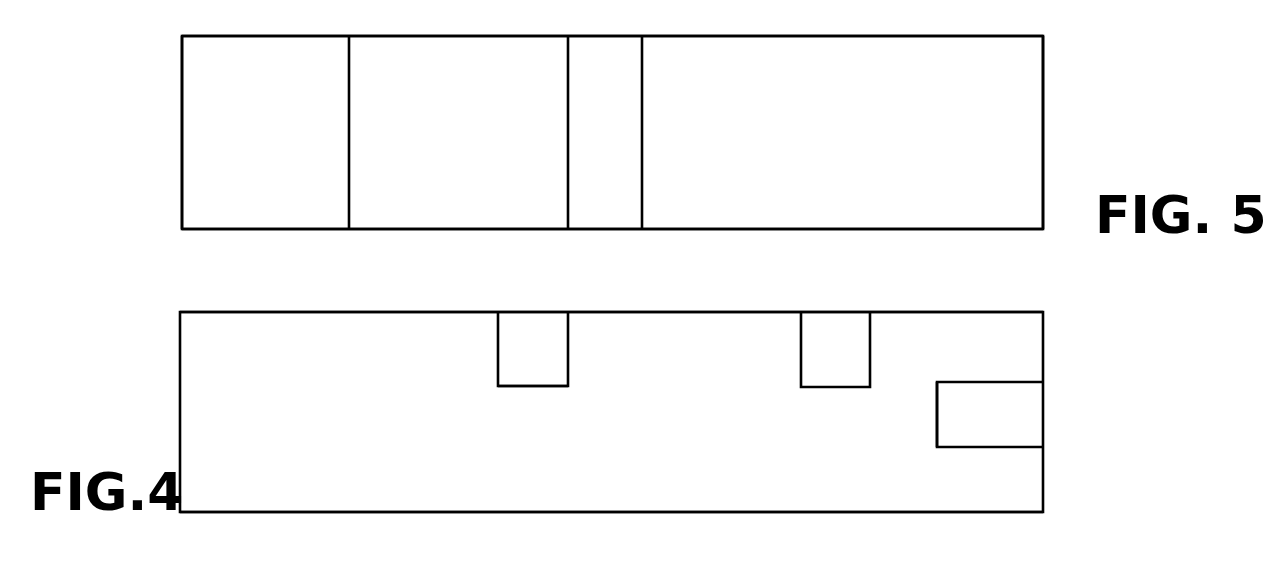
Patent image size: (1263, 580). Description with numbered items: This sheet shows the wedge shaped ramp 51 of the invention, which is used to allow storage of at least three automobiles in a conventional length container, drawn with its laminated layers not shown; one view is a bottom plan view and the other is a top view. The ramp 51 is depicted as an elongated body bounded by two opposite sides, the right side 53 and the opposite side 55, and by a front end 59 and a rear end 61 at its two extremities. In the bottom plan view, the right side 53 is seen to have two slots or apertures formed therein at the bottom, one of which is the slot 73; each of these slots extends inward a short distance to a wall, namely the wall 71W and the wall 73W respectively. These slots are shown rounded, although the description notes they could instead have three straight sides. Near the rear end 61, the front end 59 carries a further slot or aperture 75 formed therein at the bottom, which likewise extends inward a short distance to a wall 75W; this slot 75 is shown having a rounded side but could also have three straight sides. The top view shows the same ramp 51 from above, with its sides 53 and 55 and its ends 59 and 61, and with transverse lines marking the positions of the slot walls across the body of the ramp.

In FIG. 5, the wedge shaped ramp 51 is at (176, 71).
In FIG. 4, the wedge shaped ramp 51 is at (1056, 343).
In FIG. 5, the right side 53 is at (930, 36).
In FIG. 4, the right side 53 is at (407, 307).
In FIG. 5, the side 55 is at (737, 231).
In FIG. 4, the side 55 is at (356, 513).
In FIG. 5, the front end 59 is at (180, 129).
In FIG. 5, the rear end 61 is at (1045, 123).
In FIG. 4, the wall 71W is at (822, 386).
In FIG. 4, the slot 73 is at (537, 337).
In FIG. 4, the wall 73W is at (522, 385).
In FIG. 4, the slot 75 is at (1015, 435).
In FIG. 4, the wall 75W is at (937, 425).